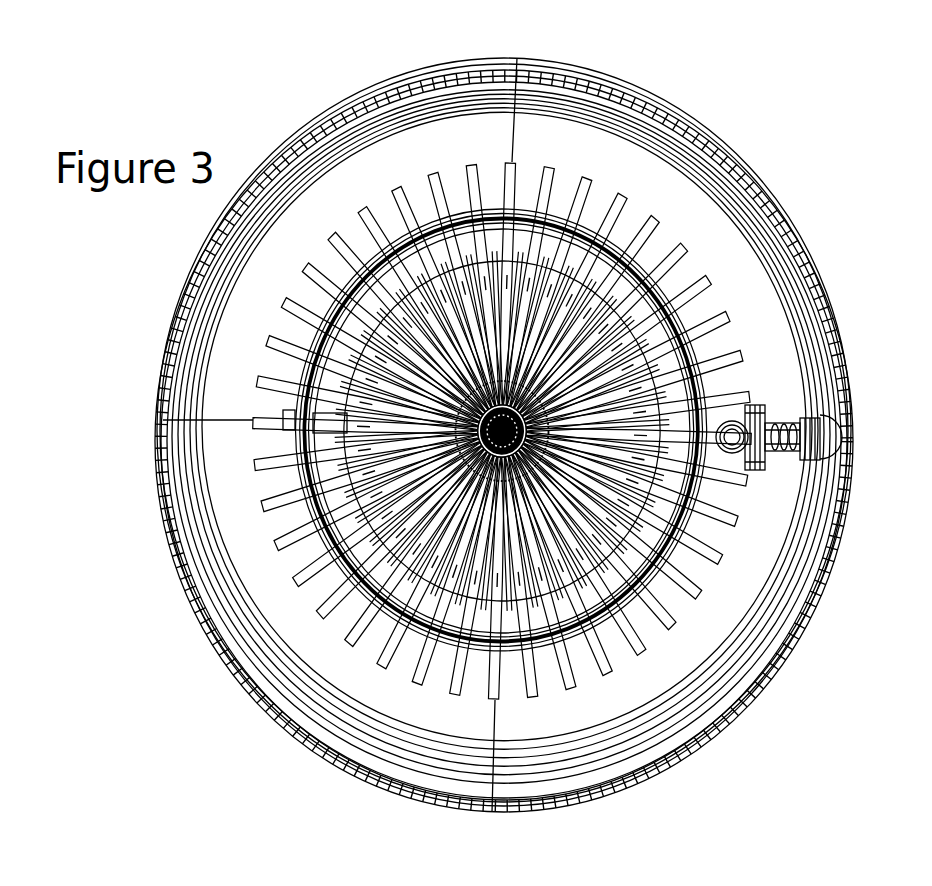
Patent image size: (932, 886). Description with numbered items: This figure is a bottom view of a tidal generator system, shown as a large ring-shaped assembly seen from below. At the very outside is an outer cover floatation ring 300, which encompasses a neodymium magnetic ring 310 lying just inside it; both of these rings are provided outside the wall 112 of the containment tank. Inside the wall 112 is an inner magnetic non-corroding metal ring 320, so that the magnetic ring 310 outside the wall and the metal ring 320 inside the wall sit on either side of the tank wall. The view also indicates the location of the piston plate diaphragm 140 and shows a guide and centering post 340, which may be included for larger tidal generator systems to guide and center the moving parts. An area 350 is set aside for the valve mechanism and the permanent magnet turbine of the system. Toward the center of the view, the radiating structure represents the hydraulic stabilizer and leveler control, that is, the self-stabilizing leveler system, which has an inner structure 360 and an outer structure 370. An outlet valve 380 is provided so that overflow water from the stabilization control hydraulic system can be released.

The outer cover floatation ring 300 is at (838, 282).
The neodymium magnetic ring 310 is at (850, 333).
The wall 112 is at (850, 377).
The inner magnetic non-corroding metal ring 320 is at (853, 413).
The piston plate diaphragm 140 is at (853, 471).
The guide and centering post 340 is at (690, 490).
The area 350 is at (846, 527).
The inner structure 360 is at (300, 373).
The outer structure 370 is at (284, 408).
The outlet valve 380 is at (265, 430).